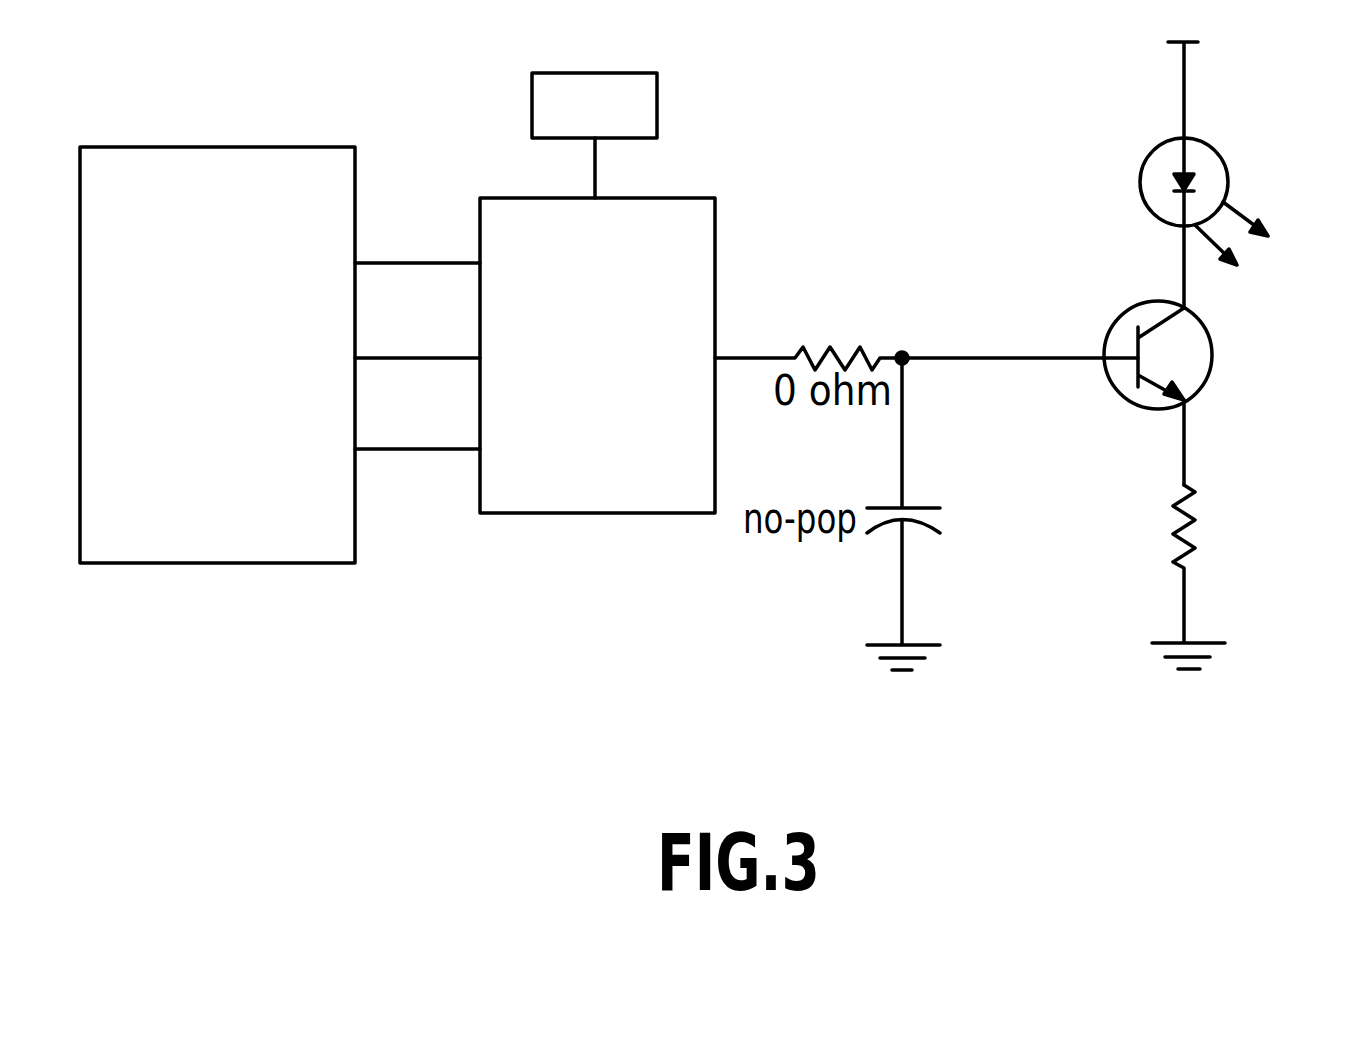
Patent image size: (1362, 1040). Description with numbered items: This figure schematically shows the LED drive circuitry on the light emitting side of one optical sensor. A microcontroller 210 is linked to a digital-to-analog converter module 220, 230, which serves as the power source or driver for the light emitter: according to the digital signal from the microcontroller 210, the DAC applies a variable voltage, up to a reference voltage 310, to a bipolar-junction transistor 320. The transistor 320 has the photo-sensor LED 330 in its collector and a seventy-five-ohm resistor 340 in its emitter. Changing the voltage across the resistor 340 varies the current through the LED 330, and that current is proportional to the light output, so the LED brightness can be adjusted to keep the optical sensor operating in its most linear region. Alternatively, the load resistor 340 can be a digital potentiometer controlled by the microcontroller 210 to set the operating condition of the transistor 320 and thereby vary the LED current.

The microcontroller 210 is at (327, 563).
The digital-to-analog converter module 220 is at (696, 339).
The digital-to-analog converter module 230 is at (715, 224).
The reference voltage 310 is at (657, 93).
The bipolar-junction transistor 320 is at (1207, 381).
The photo-sensor LED 330 is at (1210, 143).
The resistor 340 is at (1237, 537).